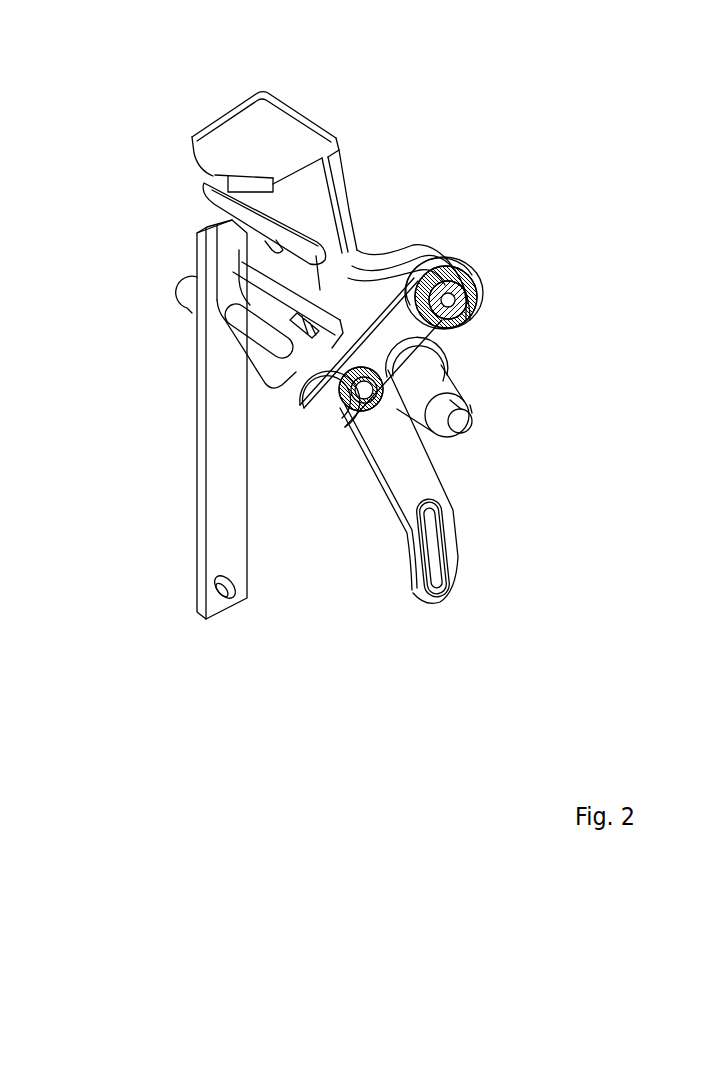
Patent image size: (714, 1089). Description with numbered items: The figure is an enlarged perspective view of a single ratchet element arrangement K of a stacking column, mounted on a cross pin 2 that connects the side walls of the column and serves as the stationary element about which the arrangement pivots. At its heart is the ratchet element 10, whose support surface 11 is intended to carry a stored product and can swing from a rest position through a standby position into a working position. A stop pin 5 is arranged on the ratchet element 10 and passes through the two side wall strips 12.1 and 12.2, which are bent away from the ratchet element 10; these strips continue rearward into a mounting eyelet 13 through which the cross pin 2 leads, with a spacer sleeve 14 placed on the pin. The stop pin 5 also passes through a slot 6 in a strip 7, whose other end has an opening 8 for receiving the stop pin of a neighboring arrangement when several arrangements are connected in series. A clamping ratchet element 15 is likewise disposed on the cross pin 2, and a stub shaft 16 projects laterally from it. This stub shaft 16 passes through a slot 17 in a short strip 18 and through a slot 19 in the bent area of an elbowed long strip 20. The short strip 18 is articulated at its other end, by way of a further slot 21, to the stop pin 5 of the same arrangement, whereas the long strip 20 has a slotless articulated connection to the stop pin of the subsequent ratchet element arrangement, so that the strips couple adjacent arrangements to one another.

The ratchet element arrangement K is at (448, 145).
The cross pin 2 is at (463, 420).
The stop pin 5 is at (184, 298).
The slot 6 is at (216, 250).
The strip 7 is at (224, 500).
The opening 8 is at (226, 598).
The ratchet element 10 is at (236, 241).
The support surface 11 is at (345, 250).
The side wall strip 12.1 is at (238, 341).
The side wall strip 12.2 is at (317, 357).
The mounting eyelet 13 is at (418, 371).
The spacer sleeve 14 is at (432, 387).
The clamping ratchet element 15 is at (226, 118).
The stub shaft 16 is at (456, 302).
The slot 17 is at (448, 266).
The short strip 18 is at (398, 340).
The slot 19 is at (413, 594).
The long strip 20 is at (400, 447).
The slot 21 is at (323, 442).